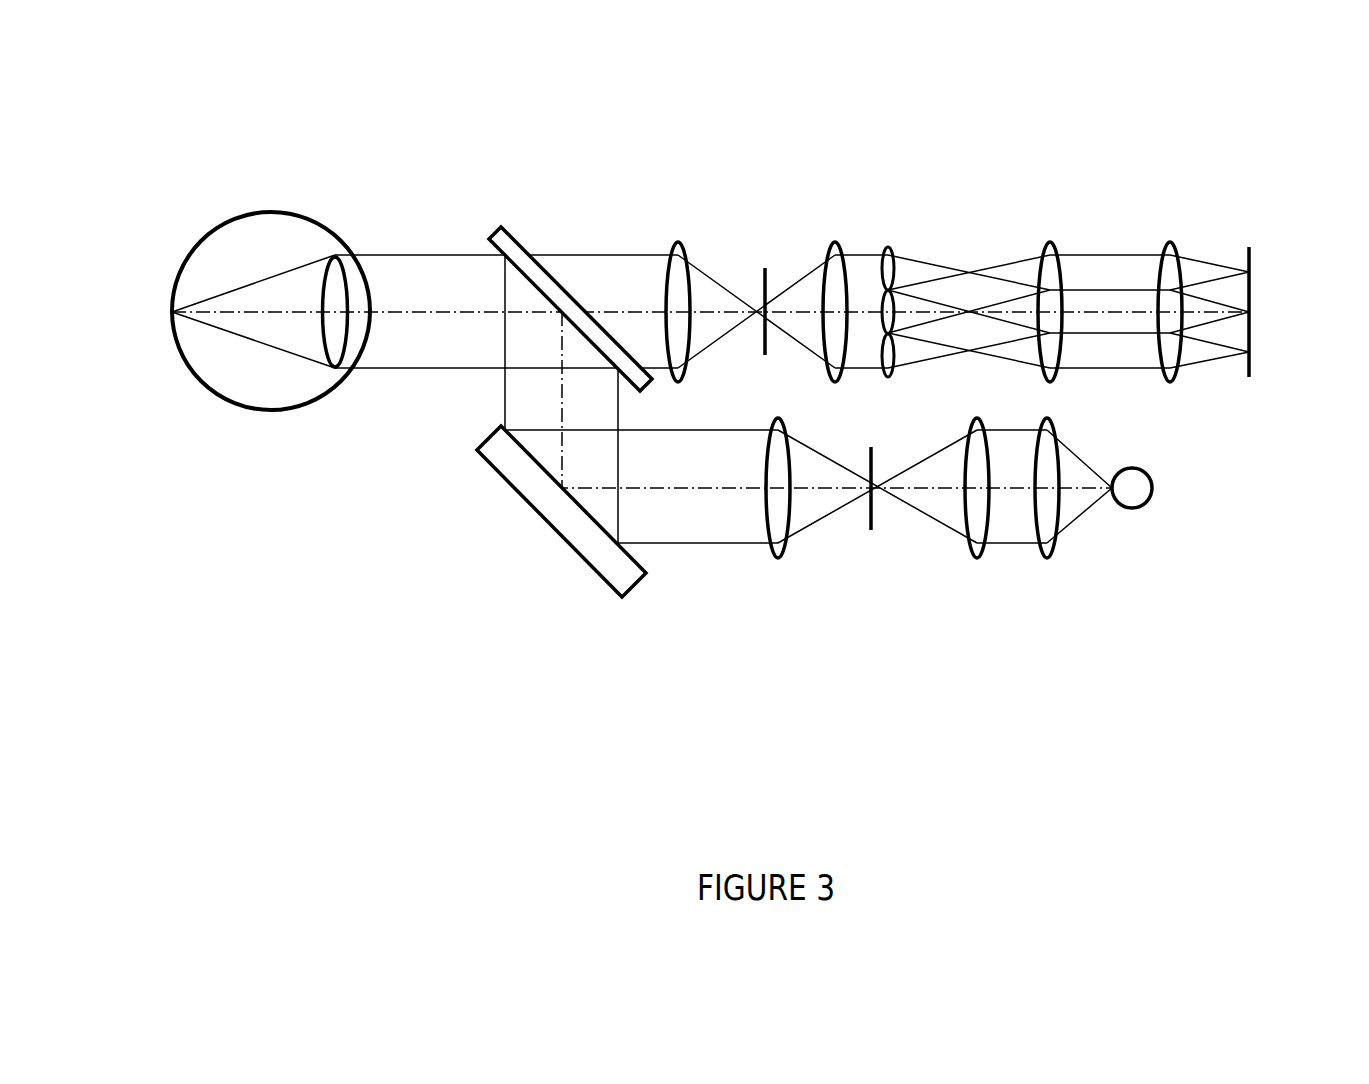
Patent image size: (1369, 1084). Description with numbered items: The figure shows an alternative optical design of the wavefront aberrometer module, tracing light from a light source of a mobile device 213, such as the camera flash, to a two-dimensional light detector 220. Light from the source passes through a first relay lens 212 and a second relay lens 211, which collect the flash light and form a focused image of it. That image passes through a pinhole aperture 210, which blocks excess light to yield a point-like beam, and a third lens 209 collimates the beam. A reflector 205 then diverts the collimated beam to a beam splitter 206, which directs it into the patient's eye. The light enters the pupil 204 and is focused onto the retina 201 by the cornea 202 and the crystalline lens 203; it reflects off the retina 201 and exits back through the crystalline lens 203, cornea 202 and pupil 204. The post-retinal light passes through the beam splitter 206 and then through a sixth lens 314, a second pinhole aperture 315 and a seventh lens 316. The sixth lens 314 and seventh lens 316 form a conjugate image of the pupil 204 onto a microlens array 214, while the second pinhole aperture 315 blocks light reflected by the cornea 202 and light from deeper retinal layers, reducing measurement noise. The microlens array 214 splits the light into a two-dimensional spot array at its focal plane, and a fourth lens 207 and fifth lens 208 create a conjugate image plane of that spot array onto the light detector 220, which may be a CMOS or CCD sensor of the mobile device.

The retina 201 is at (172, 312).
The cornea 202 is at (356, 298).
The crystalline lens 203 is at (335, 257).
The pupil 204 is at (347, 320).
The reflector 205 is at (503, 478).
The beam splitter 206 is at (523, 245).
The fourth lens 207 is at (1050, 242).
The fifth lens 208 is at (1170, 242).
The third lens 209 is at (778, 558).
The pinhole aperture 210 is at (871, 532).
The second relay lens 211 is at (977, 558).
The first relay lens 212 is at (1047, 558).
The light source of a mobile device 213 is at (1130, 508).
The microlens array 214 is at (888, 247).
The light detector 220 is at (1252, 290).
The sixth lens 314 is at (678, 242).
The second pinhole aperture 315 is at (765, 268).
The seventh lens 316 is at (835, 382).